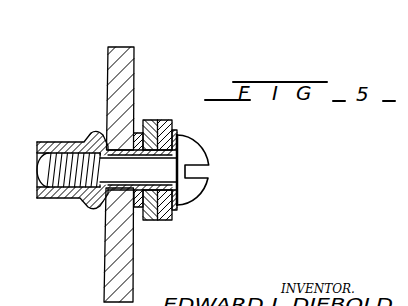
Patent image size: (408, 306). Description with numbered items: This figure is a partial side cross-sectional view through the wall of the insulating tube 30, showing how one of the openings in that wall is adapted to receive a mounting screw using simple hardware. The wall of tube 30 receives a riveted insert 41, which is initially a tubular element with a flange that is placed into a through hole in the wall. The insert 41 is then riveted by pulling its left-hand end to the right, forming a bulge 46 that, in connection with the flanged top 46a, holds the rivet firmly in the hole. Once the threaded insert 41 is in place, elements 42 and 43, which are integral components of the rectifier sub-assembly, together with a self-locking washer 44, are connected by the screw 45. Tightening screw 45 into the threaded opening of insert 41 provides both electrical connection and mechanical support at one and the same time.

The tube 30 is at (118, 78).
The riveted insert 41 is at (52, 142).
The element 42 is at (153, 123).
The element 43 is at (163, 222).
The self-locking washer 44 is at (179, 134).
The screw 45 is at (205, 153).
The bulge 46 is at (92, 209).
The flanged top 46a is at (138, 131).